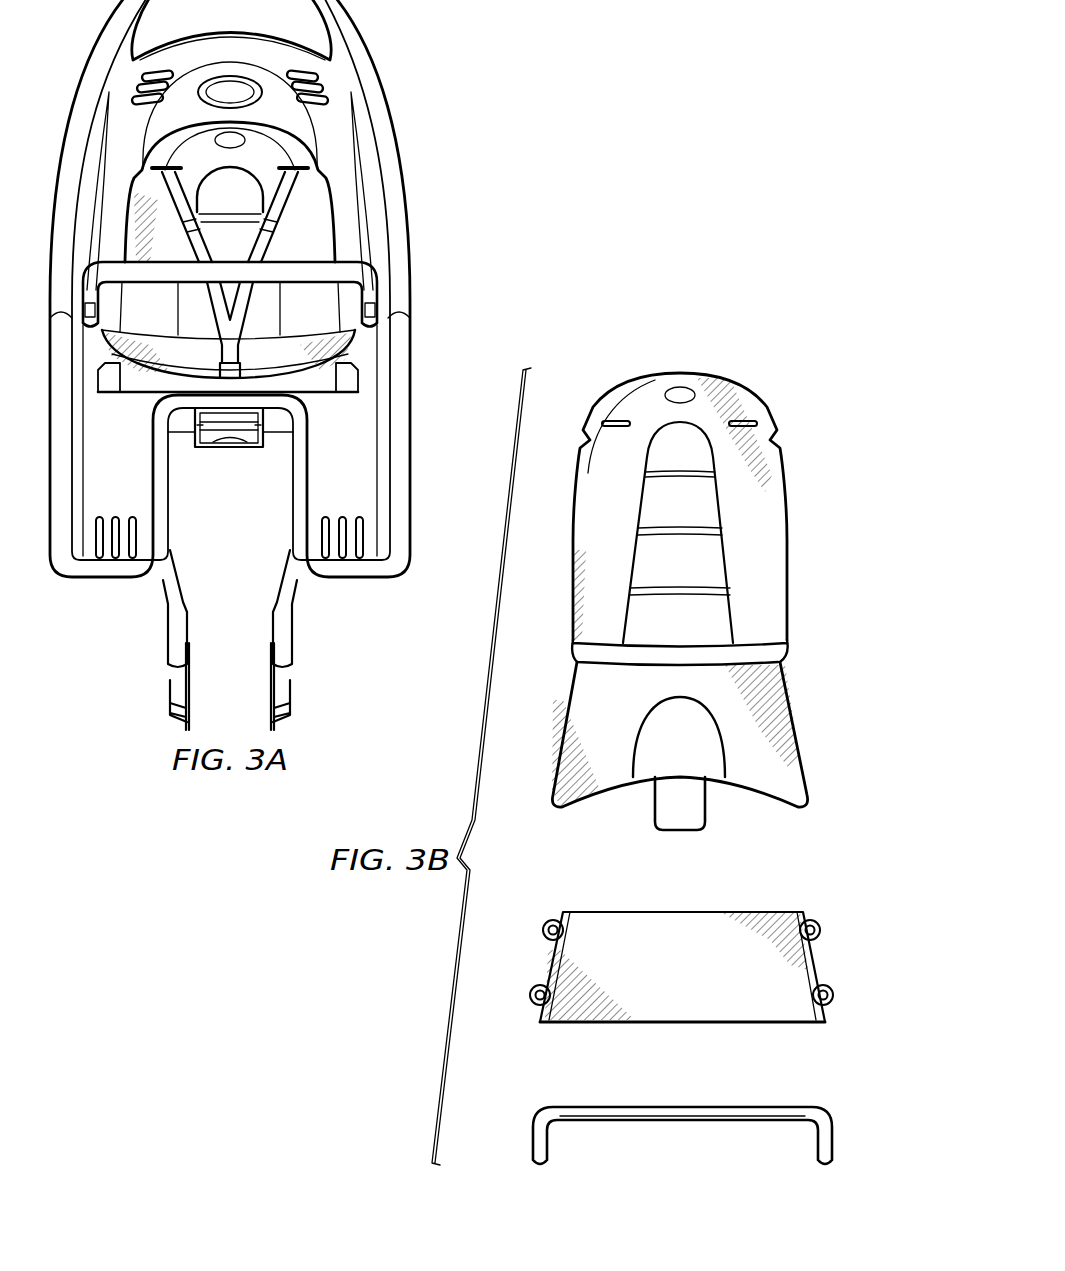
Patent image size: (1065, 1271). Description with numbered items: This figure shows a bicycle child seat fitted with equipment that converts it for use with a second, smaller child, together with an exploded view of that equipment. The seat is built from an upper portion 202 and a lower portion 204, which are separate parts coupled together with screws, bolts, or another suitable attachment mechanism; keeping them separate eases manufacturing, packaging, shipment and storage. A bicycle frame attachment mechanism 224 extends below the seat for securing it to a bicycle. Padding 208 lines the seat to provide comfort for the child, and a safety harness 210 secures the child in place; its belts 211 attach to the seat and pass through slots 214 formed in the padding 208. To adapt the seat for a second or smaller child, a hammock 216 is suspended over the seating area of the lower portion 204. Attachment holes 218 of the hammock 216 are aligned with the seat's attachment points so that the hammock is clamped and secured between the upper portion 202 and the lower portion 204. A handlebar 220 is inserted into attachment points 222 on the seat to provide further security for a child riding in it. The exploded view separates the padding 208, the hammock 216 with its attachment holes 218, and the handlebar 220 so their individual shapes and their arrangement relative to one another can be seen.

In FIG. 3A, the upper portion 202 is at (95, 38).
In FIG. 3A, the lower portion 204 is at (110, 578).
In FIG. 3B, the padding 208 is at (740, 387).
In FIG. 3A, the safety harness 210 is at (292, 243).
In FIG. 3A, the belts 211 is at (282, 187).
In FIG. 3A, the slots 214 is at (303, 155).
In FIG. 3A, the hammock 216 is at (140, 345).
In FIG. 3B, the hammock 216 is at (683, 912).
In FIG. 3B, the attachment holes 218 is at (546, 927).
In FIG. 3A, the handlebar 220 is at (303, 284).
In FIG. 3B, the handlebar 220 is at (683, 1107).
In FIG. 3A, the attachment points 222 is at (397, 301).
In FIG. 3A, the bicycle frame attachment mechanism 224 is at (293, 655).